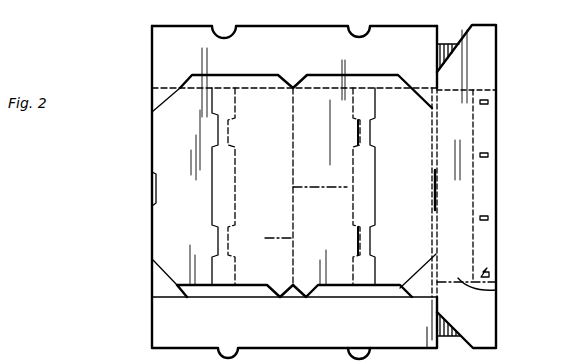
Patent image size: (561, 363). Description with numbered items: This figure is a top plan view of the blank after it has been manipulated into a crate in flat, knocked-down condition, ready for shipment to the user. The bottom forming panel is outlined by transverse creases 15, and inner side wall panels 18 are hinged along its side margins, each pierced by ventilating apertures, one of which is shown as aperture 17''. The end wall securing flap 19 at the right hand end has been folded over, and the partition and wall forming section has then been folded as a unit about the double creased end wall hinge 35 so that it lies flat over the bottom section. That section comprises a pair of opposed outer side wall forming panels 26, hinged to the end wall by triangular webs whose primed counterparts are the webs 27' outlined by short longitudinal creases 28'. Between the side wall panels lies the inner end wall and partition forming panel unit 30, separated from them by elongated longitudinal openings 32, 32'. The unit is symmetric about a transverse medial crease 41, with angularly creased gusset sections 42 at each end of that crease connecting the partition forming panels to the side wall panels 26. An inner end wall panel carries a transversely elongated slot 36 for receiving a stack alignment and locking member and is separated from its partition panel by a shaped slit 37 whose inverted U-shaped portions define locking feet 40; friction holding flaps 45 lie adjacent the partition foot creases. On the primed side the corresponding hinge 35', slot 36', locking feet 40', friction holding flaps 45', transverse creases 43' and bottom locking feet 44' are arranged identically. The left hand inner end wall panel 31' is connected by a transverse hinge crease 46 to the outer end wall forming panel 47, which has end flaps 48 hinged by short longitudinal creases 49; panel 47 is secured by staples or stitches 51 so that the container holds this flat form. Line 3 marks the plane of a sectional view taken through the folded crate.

The outer side wall forming panels 26 is at (300, 35).
The longitudinally extending opening 32 is at (221, 191).
The gusset sections 42 is at (310, 66).
The longitudinally extending opening 32' is at (353, 186).
The short longitudinal crease 28' is at (411, 78).
The staples or stitches 51 is at (447, 78).
The short longitudinal creases 49 is at (496, 60).
The transverse creases 15 is at (496, 100).
The end wall securing flap 19 is at (473, 140).
The section line 3 is at (493, 185).
The double creased end wall hinge 35 is at (132, 187).
The transversely elongated slot 36 is at (169, 181).
The shaped slit 37 is at (210, 184).
The friction holding flaps 45 is at (243, 145).
The transverse medial crease 41 is at (297, 150).
The bottom locking feet 44' is at (334, 124).
The locking feet 40' is at (388, 124).
The friction holding flaps 45' is at (389, 150).
The double creased end wall hinge 35' is at (453, 114).
The transversely elongated slot 36' is at (449, 186).
The transversely extending creases 43' is at (331, 207).
The transverse hinge crease 46 is at (437, 228).
The locking feet 40 is at (222, 241).
The triangular webs 27' is at (413, 265).
The inner end wall panel 31' is at (450, 245).
The inner end wall and partition forming panel unit 30 is at (168, 255).
The notch 17'' is at (244, 337).
The outer end wall forming panel 47 is at (496, 290).
The end flaps 48 is at (485, 317).
The inner side wall panels 18 is at (448, 337).